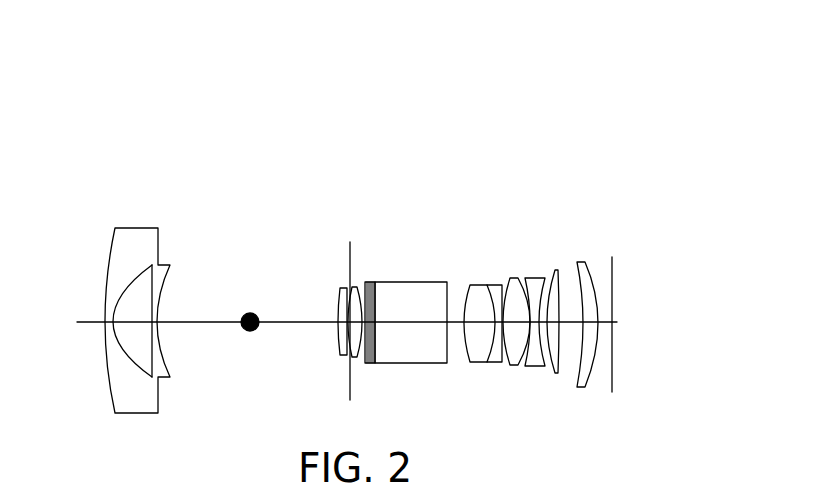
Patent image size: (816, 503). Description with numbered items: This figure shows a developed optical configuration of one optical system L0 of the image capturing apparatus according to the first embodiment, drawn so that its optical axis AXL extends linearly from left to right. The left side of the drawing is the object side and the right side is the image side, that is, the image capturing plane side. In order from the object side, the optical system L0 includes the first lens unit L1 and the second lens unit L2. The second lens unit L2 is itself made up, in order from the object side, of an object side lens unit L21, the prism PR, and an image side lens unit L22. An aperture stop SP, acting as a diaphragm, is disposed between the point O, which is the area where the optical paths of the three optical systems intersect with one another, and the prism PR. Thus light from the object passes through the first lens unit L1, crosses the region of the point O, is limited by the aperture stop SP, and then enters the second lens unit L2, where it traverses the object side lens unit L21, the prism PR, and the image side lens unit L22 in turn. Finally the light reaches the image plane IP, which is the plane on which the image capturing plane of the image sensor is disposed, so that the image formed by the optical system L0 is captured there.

The optical system L0 is at (602, 90).
The first lens unit L1 is at (180, 152).
The second lens unit L2 is at (602, 152).
The object side lens unit L21 is at (367, 218).
The image side lens unit L22 is at (597, 218).
The aperture stop SP is at (347, 262).
The point O is at (246, 313).
The optical axis AXL is at (183, 323).
The prism PR is at (407, 360).
The image plane IP is at (617, 270).